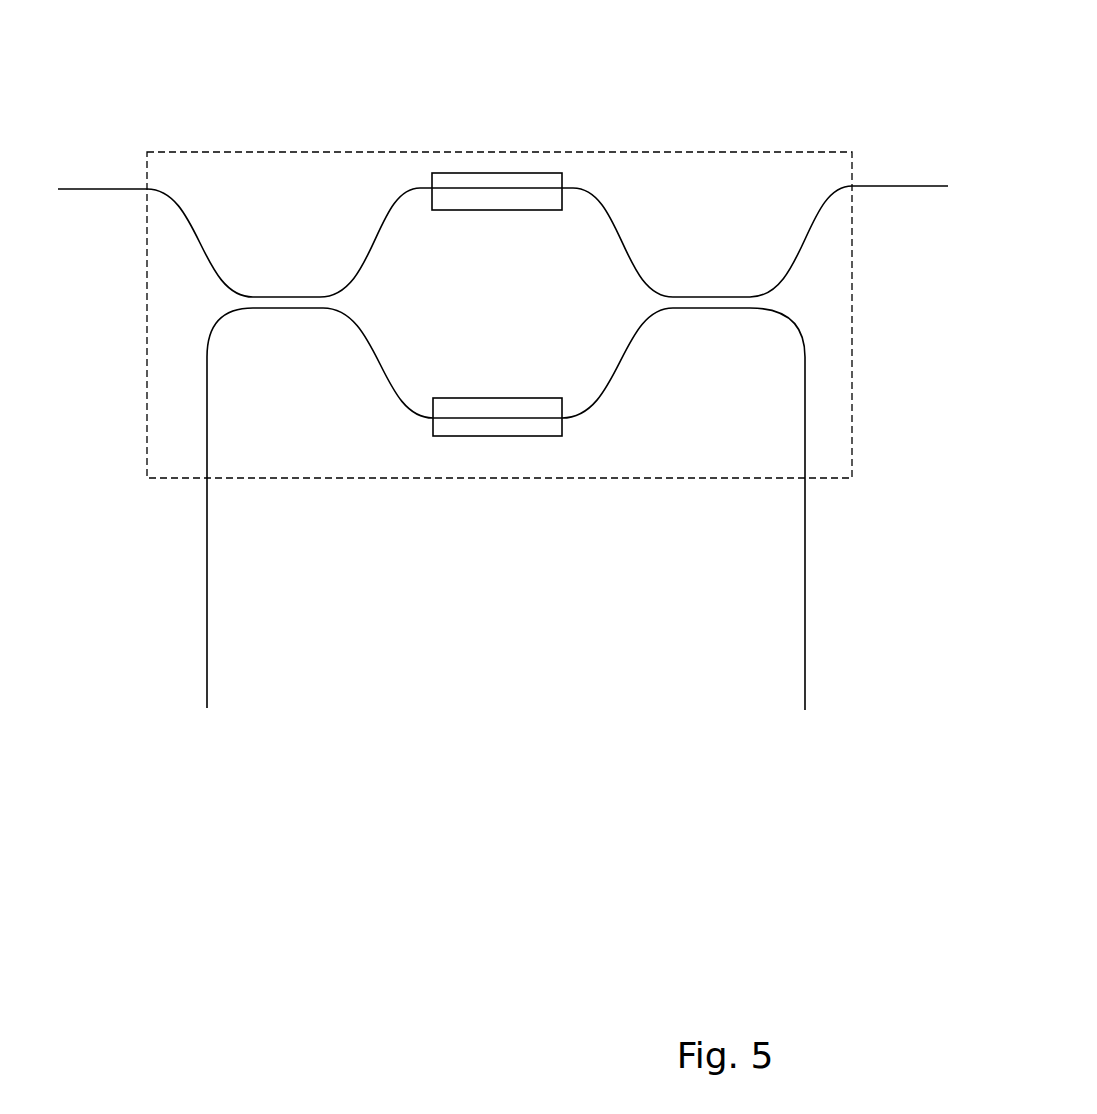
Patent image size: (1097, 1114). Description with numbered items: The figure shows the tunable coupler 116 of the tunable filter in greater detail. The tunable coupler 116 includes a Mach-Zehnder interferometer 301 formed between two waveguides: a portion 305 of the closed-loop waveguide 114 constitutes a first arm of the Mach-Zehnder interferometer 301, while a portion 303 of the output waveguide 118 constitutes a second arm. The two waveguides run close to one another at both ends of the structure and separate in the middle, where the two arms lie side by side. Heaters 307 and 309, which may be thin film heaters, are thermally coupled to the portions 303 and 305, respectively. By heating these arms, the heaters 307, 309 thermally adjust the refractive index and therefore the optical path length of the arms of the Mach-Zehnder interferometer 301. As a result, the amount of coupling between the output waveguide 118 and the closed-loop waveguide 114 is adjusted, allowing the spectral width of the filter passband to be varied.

The closed-loop waveguide 114 is at (206, 625).
The tunable coupler 116 is at (385, 478).
The output waveguide 118 is at (88, 189).
The Mach-Zehnder interferometer 301 is at (350, 406).
The portion of output waveguide 303 is at (375, 243).
The portion of closed-loop waveguide 305 is at (615, 390).
The heater 307 is at (532, 173).
The heater 309 is at (548, 436).